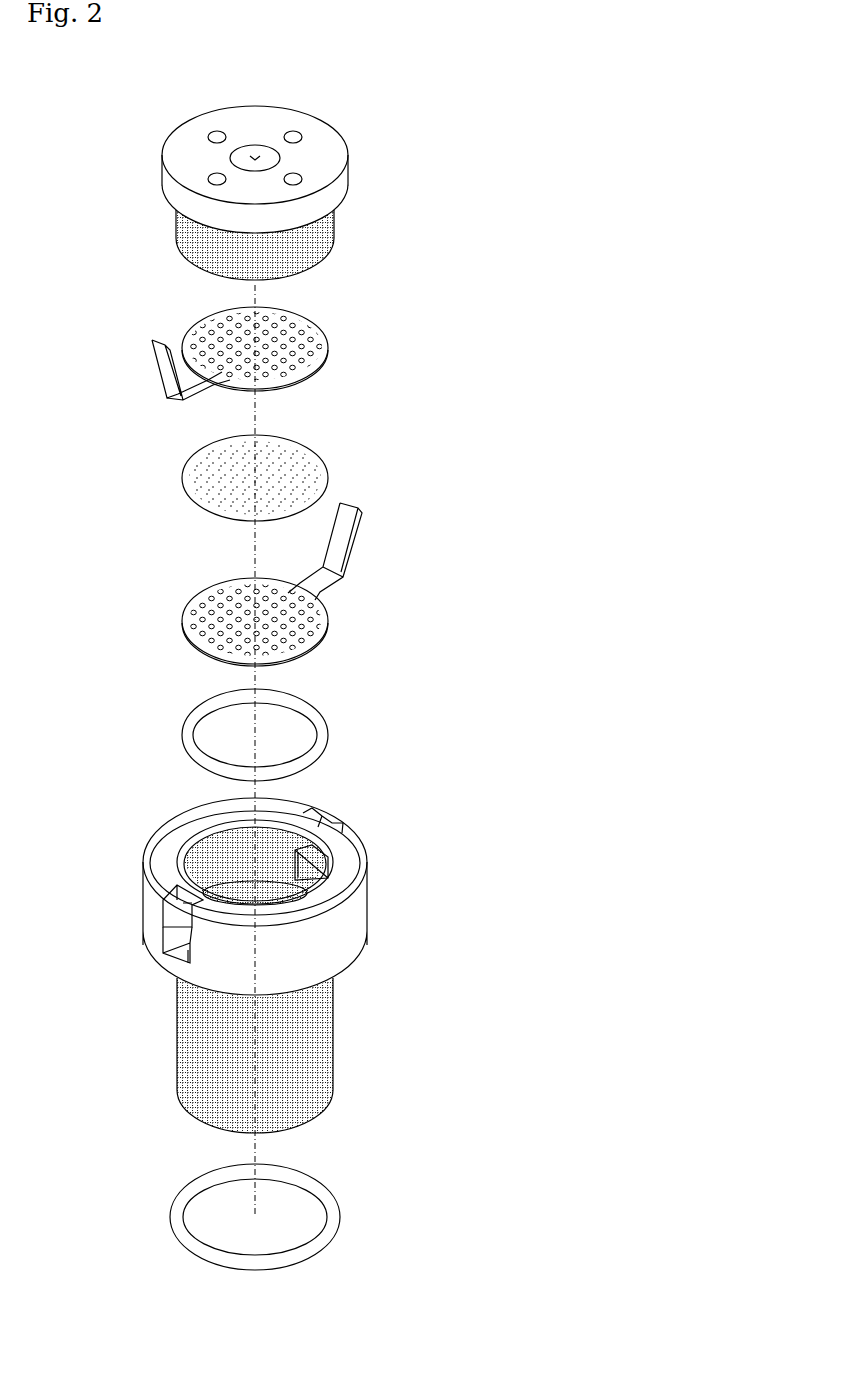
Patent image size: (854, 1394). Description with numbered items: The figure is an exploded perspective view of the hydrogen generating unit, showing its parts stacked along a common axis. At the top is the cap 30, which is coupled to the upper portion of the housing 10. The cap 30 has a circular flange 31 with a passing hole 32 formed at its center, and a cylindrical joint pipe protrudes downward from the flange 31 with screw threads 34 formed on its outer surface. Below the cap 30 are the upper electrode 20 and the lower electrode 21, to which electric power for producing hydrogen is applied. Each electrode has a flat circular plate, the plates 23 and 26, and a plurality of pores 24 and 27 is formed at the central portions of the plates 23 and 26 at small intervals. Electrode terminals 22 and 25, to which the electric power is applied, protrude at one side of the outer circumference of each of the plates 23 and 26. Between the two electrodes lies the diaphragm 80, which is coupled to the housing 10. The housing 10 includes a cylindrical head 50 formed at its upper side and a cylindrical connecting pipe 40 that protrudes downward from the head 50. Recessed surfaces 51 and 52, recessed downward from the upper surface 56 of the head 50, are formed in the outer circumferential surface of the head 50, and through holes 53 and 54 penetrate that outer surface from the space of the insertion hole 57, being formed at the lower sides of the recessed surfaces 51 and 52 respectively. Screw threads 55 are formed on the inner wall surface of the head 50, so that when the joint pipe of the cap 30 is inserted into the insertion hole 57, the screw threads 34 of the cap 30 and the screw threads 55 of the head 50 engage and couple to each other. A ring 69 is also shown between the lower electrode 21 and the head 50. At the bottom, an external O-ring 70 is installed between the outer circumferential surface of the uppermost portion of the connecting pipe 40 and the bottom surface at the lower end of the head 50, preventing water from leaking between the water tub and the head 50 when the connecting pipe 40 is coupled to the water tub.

The housing 10 is at (266, 878).
The upper electrode 20 is at (246, 346).
The lower electrode 21 is at (276, 584).
The electrode terminal 22 is at (158, 363).
The flat circular plate 23 is at (192, 331).
The pores 24 is at (313, 355).
The electrode terminal 25 is at (343, 539).
The flat circular plate 26 is at (207, 590).
The pores 27 is at (196, 618).
The cap 30 is at (268, 171).
The circular flange 31 is at (176, 153).
The passing hole 32 is at (257, 152).
The screw threads 34 is at (195, 231).
The connecting pipe 40 is at (307, 1045).
The head 50 is at (253, 878).
The recessed surface 51 is at (168, 895).
The recessed surface 52 is at (325, 822).
The through hole 53 is at (165, 933).
The through hole 54 is at (322, 857).
The screw threads 55 is at (237, 840).
The upper surface 56 is at (165, 860).
The insertion hole 57 is at (228, 862).
The gasket ring 69 is at (320, 725).
The external O-ring 70 is at (330, 1200).
The diaphragm 80 is at (305, 470).